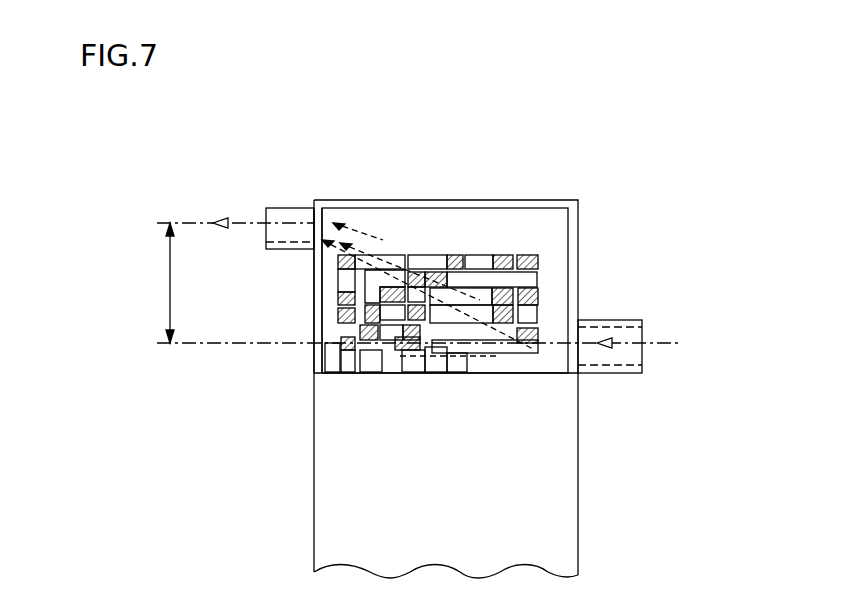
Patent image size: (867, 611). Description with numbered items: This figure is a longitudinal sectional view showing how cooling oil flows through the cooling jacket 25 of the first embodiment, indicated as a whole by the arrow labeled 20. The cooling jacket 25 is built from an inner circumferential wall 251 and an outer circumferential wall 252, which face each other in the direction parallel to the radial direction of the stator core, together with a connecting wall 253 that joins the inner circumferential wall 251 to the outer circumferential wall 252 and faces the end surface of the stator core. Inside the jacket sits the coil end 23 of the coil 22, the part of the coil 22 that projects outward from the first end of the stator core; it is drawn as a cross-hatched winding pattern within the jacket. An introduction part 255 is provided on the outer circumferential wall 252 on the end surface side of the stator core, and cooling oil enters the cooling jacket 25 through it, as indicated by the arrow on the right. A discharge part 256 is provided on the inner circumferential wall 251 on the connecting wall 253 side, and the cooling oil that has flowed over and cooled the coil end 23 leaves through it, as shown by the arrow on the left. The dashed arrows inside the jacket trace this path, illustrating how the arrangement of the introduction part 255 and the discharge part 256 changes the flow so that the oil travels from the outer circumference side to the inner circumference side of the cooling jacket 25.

The apparatus 20 is at (653, 140).
The coil 22 is at (430, 253).
The coil end 23 is at (388, 240).
The cooling jacket 25 is at (527, 196).
The inner circumferential wall 251 is at (314, 293).
The outer circumferential wall 252 is at (580, 236).
The connecting wall 253 is at (441, 200).
The introduction part 255 is at (606, 320).
The discharge part 256 is at (289, 208).